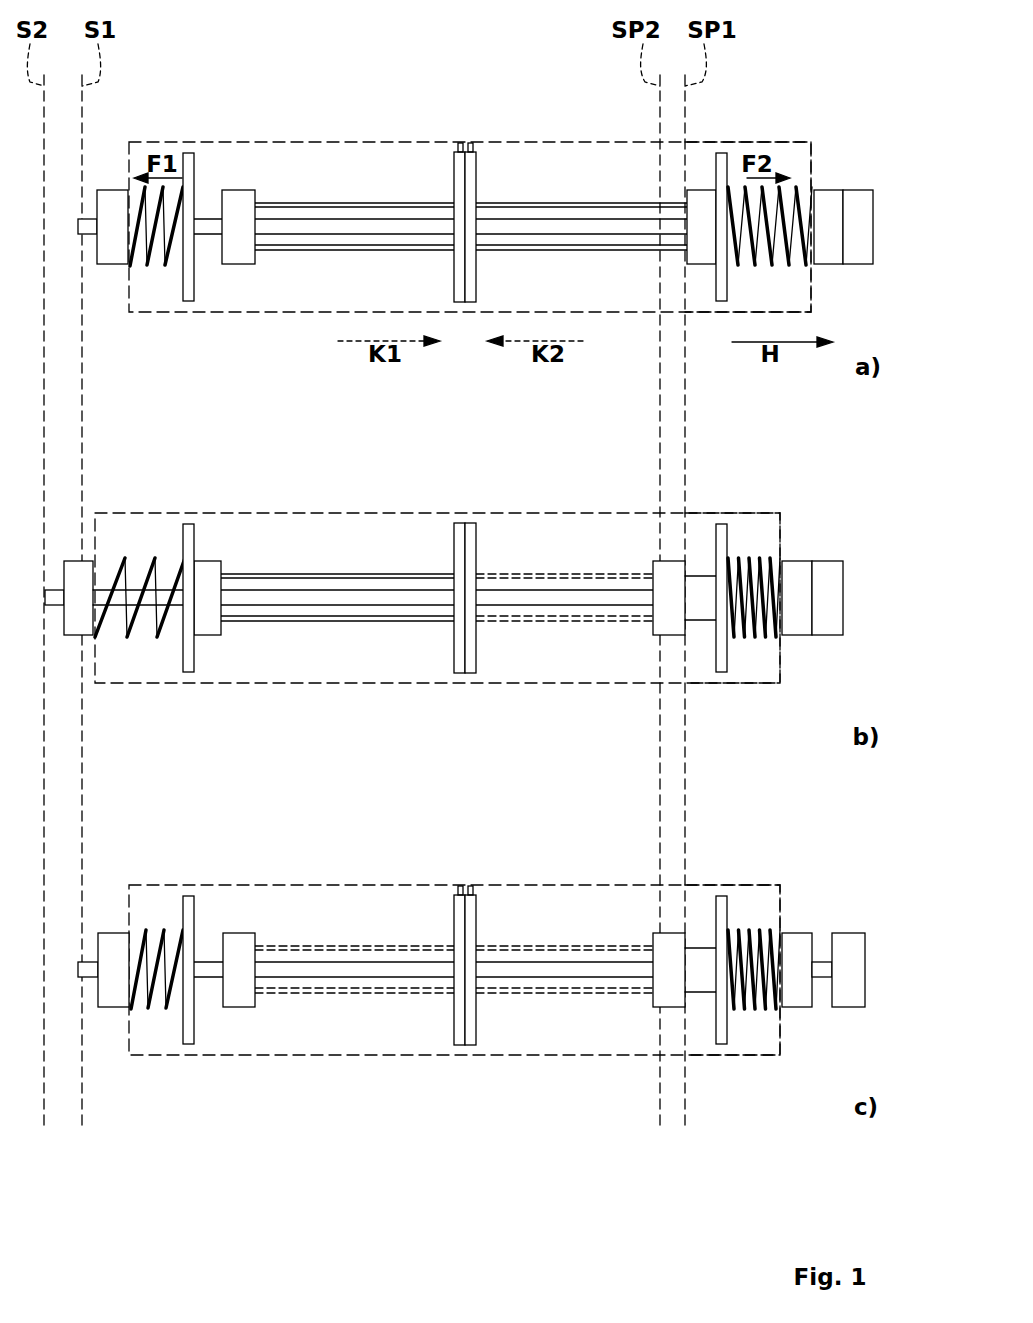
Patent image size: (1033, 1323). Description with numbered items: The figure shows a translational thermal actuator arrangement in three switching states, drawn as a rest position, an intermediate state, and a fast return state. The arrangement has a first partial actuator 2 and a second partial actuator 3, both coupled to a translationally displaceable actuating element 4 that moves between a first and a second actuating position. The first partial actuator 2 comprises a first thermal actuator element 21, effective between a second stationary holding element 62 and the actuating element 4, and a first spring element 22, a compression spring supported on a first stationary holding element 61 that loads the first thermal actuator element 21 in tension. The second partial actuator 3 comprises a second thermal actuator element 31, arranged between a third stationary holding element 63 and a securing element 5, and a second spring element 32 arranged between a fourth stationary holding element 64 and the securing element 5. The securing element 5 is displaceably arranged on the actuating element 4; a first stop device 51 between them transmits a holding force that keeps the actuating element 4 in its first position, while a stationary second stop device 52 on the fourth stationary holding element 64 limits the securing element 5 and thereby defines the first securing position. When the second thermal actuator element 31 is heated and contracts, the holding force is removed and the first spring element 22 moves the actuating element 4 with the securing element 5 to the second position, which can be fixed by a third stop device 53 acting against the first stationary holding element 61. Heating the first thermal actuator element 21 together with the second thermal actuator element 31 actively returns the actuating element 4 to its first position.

The first partial actuator 2 is at (300, 142).
The second partial actuator 3 is at (765, 142).
The actuating element 4 is at (580, 228).
The securing element 5 is at (826, 190).
The first thermal actuator element 21 is at (343, 203).
The first spring element 22 is at (150, 265).
The second thermal actuator element 31 is at (543, 203).
The second spring element 32 is at (797, 264).
The first stop device 51 is at (843, 190).
The second stop device 52 is at (708, 266).
The third stop device 53 is at (197, 558).
The first stationary holding element 61 is at (188, 152).
The second stationary holding element 62 is at (459, 143).
The third stationary holding element 63 is at (470, 143).
The fourth stationary holding element 64 is at (722, 152).